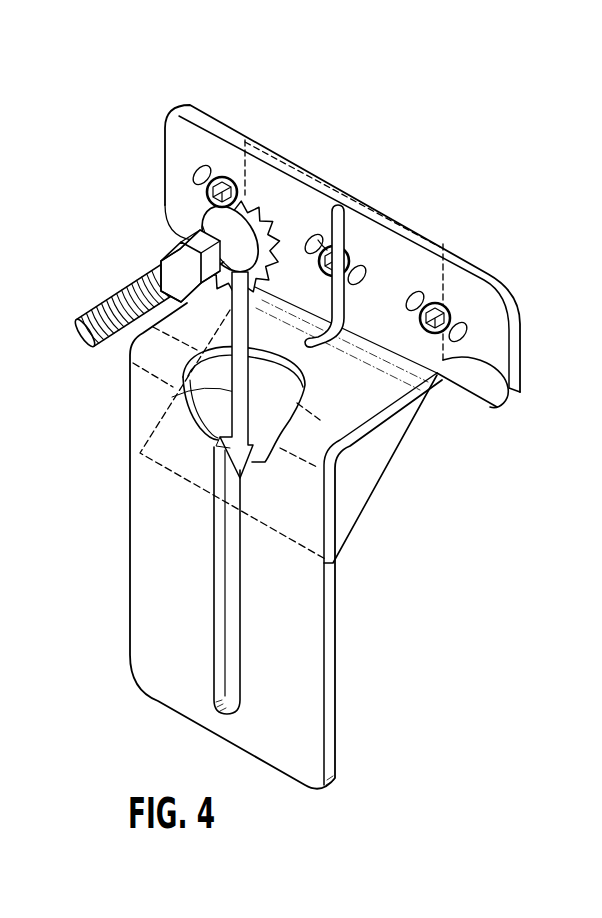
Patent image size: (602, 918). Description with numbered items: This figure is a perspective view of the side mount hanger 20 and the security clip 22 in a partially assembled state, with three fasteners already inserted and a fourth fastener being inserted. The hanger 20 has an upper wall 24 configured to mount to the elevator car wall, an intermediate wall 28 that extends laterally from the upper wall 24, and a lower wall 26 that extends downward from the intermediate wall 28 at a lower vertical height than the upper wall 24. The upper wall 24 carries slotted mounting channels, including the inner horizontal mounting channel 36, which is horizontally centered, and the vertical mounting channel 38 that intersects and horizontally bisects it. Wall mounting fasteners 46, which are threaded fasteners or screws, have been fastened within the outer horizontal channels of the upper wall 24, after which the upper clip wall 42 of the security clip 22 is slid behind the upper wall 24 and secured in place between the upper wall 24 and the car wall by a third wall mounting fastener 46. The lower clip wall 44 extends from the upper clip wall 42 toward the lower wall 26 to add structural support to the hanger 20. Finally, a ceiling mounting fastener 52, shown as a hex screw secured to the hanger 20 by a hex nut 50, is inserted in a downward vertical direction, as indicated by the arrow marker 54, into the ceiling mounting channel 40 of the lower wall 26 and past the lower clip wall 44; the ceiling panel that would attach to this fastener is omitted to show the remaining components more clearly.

The hanger 20 is at (128, 90).
The security clip 22 is at (386, 480).
The upper wall 24 is at (166, 172).
The lower wall 26 is at (130, 605).
The intermediate wall 28 is at (385, 413).
The inner horizontal mounting channel 36 is at (365, 268).
The vertical mounting channel 38 is at (334, 198).
The ceiling mounting channel 40 is at (240, 648).
The upper clip wall 42 is at (520, 393).
The lower clip wall 44 is at (357, 530).
The wall mounting fastener 46 is at (320, 242).
The hex nut 50 is at (172, 245).
The ceiling mounting fastener 52 is at (117, 287).
The arrow marker 54 is at (182, 392).